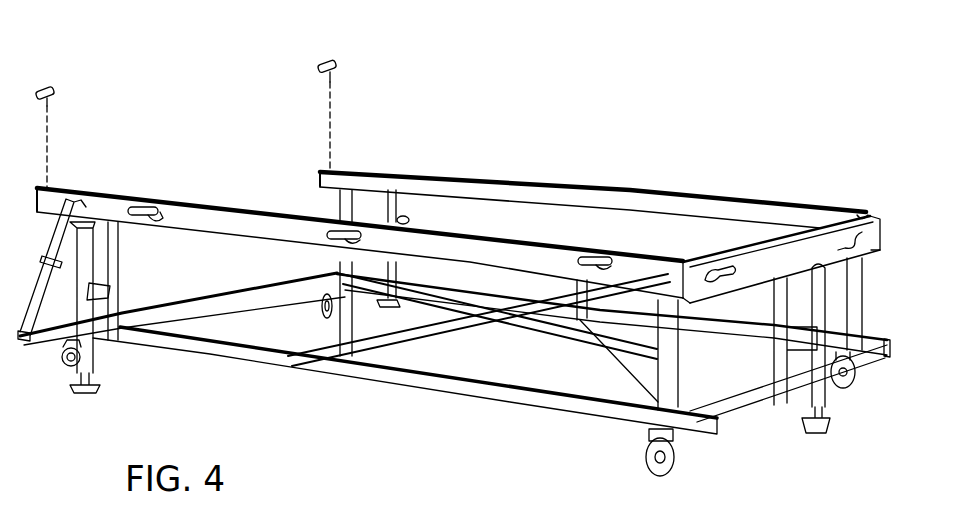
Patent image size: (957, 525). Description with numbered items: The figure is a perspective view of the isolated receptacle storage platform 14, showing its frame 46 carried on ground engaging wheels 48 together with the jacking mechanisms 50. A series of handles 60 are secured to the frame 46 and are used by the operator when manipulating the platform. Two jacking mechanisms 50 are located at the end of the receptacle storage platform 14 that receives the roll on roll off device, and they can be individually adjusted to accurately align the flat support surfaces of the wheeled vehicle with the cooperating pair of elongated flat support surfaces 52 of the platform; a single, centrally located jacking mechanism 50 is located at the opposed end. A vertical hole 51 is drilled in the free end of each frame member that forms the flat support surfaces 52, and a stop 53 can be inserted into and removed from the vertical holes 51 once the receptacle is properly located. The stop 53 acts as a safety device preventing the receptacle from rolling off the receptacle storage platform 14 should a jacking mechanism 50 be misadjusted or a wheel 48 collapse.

The receptacle storage platform 14 is at (654, 161).
The frame 46 is at (486, 413).
The ground engaging wheels 48 is at (62, 370).
The jacking mechanisms 50 is at (88, 357).
The vertical hole 51 is at (57, 189).
The flat support surfaces 52 is at (473, 177).
The stop 53 is at (50, 85).
The handles 60 is at (150, 205).